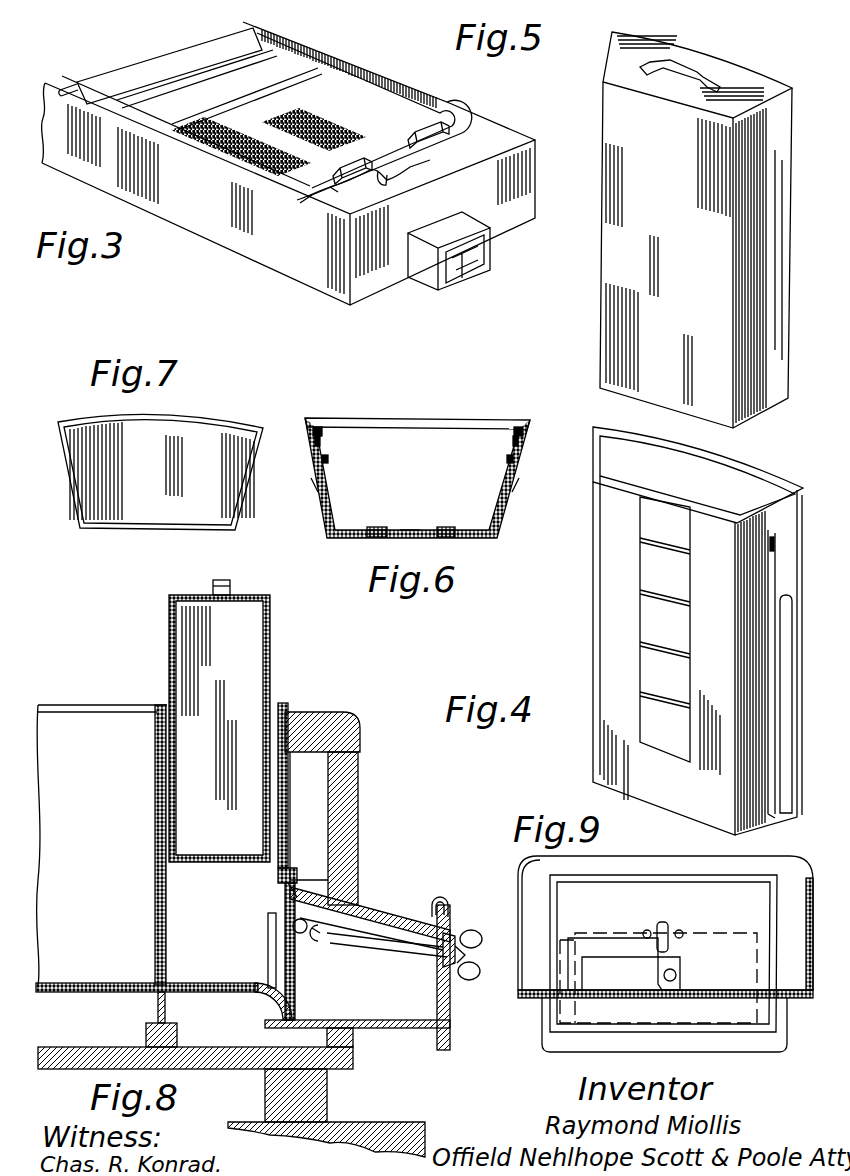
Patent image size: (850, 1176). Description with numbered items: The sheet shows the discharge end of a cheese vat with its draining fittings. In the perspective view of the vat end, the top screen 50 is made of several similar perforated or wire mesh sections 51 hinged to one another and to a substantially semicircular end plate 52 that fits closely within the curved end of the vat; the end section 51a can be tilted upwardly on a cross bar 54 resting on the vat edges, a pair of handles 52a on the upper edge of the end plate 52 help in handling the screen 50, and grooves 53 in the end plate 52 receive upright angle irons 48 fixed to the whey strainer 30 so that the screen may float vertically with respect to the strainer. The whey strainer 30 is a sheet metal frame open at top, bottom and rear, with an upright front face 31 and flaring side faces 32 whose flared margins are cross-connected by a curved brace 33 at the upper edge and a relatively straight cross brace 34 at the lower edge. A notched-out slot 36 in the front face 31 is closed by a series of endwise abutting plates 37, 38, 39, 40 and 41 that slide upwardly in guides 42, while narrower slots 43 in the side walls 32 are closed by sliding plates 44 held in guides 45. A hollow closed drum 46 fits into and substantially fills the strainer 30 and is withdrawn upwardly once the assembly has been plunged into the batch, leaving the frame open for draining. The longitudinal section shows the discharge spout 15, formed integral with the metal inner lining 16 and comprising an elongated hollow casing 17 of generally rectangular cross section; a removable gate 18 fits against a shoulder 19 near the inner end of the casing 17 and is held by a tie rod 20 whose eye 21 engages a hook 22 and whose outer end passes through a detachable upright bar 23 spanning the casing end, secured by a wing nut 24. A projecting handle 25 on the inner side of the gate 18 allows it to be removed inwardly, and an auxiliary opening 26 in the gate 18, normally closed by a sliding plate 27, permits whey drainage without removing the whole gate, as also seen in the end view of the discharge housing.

In FIG. 3, the discharge spout 15 is at (440, 283).
In FIG. 8, the discharge spout 15 is at (353, 1049).
In FIG. 8, the metal inner lining 16 is at (288, 792).
In FIG. 8, the hollow casing 17 is at (370, 921).
In FIG. 8, the gate 18 is at (333, 893).
In FIG. 8, the shoulder 19 is at (300, 873).
In FIG. 8, the tie rod 20 is at (393, 943).
In FIG. 8, the eye 21 is at (340, 913).
In FIG. 8, the hook 22 is at (318, 942).
In FIG. 8, the upright bar 23 is at (451, 906).
In FIG. 8, the wing nut 24 is at (497, 926).
In FIG. 8, the projecting handle 25 is at (292, 925).
In FIG. 9, the projecting handle 25 is at (668, 926).
In FIG. 8, the auxiliary opening 26 is at (278, 963).
In FIG. 9, the auxiliary opening 26 is at (602, 952).
In FIG. 8, the sliding plate 27 is at (258, 1017).
In FIG. 9, the sliding plate 27 is at (666, 966).
In FIG. 3, the whey strainer 30 is at (462, 134).
In FIG. 6, the whey strainer 30 is at (516, 520).
In FIG. 4, the whey strainer 30 is at (583, 605).
In FIG. 8, the whey strainer 30 is at (156, 705).
In FIG. 9, the whey strainer 30 is at (665, 954).
In FIG. 6, the front face 31 is at (349, 539).
In FIG. 4, the front face 31 is at (612, 651).
In FIG. 6, the flaring side faces 32 is at (312, 474).
In FIG. 4, the curved brace 33 is at (760, 466).
In FIG. 8, the curved brace 33 is at (275, 704).
In FIG. 6, the cross brace 34 is at (470, 418).
In FIG. 8, the cross brace 34 is at (203, 994).
In FIG. 4, the notched-out slot 36 is at (688, 580).
In FIG. 4, the plate 37 is at (663, 524).
In FIG. 4, the plate 38 is at (663, 576).
In FIG. 6, the plate 39 is at (410, 529).
In FIG. 4, the plate 39 is at (664, 628).
In FIG. 4, the plate 40 is at (675, 688).
In FIG. 4, the plate 41 is at (675, 738).
In FIG. 6, the guides 42 is at (377, 528).
In FIG. 6, the slots 43 is at (306, 442).
In FIG. 4, the slots 43 is at (787, 774).
In FIG. 6, the sliding plates 44 is at (319, 438).
In FIG. 6, the guides 45 is at (320, 420).
In FIG. 5, the hollow drum 46 is at (748, 82).
In FIG. 7, the hollow drum 46 is at (110, 409).
In FIG. 8, the hollow drum 46 is at (169, 639).
In FIG. 3, the angle irons 48 is at (381, 174).
In FIG. 6, the angle irons 48 is at (315, 494).
In FIG. 4, the angle irons 48 is at (775, 545).
In FIG. 3, the top screen 50 is at (369, 104).
In FIG. 3, the sections 51 is at (322, 83).
In FIG. 3, the end section 51a is at (150, 62).
In FIG. 3, the end plate 52 is at (403, 128).
In FIG. 3, the handles 52a is at (433, 147).
In FIG. 3, the grooves 53 is at (343, 195).
In FIG. 3, the cross bar 54 is at (70, 88).